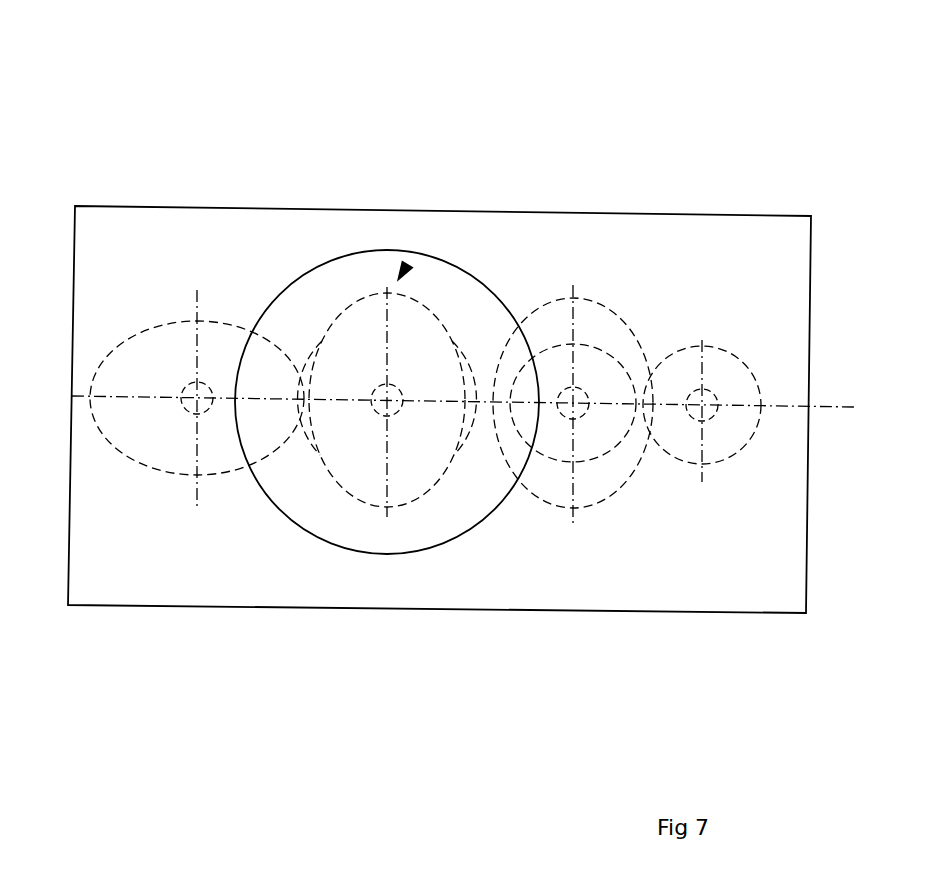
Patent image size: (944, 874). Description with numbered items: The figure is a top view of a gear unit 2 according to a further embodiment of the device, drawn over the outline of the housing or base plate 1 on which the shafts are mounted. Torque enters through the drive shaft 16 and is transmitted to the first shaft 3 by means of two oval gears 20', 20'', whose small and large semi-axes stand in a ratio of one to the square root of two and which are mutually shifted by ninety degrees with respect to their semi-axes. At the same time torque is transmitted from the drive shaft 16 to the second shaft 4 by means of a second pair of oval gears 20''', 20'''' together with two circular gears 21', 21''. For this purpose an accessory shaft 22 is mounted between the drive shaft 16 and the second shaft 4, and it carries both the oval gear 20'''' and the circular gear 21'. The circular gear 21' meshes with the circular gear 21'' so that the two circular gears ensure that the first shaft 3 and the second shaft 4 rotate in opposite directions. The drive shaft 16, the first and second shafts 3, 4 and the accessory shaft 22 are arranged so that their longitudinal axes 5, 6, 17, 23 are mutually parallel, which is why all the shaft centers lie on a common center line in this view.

The drum 1 is at (323, 297).
The gear unit 2 is at (405, 268).
The first shaft 3 is at (200, 410).
The second shaft 4 is at (694, 414).
The longitudinal axis 5 is at (193, 403).
The longitudinal axis 6 is at (706, 411).
The drive shaft 16 is at (390, 410).
The longitudinal axis 17 is at (385, 410).
The oval gear 20' is at (298, 311).
The oval gear 20'' is at (167, 307).
The oval gear 20''' is at (532, 279).
The oval gear 20'''' is at (652, 308).
The circular gear 21' is at (604, 281).
The circular gear 21'' is at (762, 350).
The accessory shaft 22 is at (577, 415).
The longitudinal axis 23 is at (572, 412).